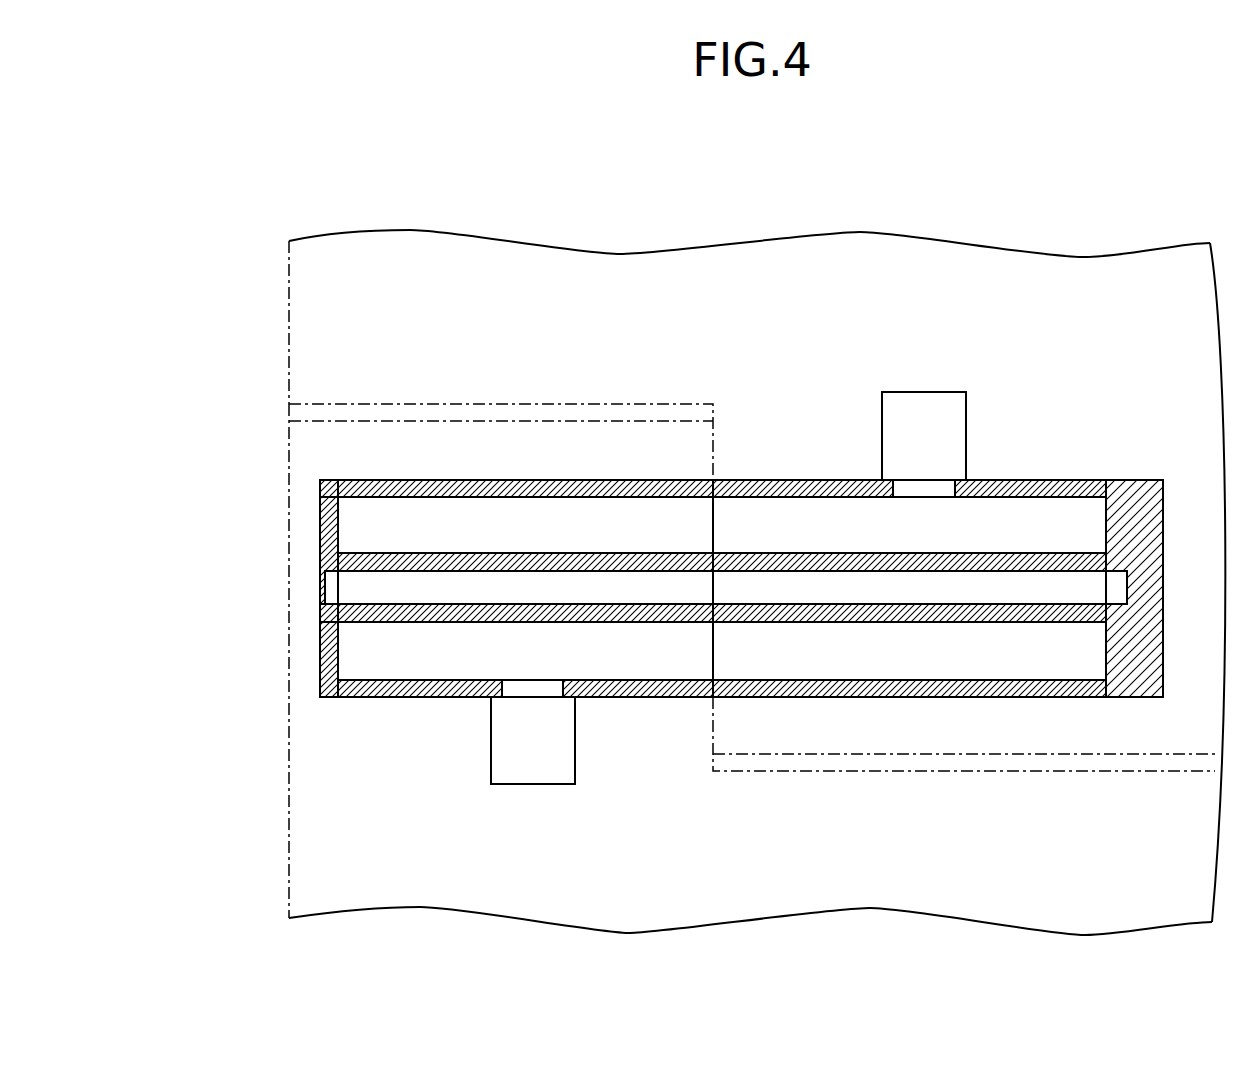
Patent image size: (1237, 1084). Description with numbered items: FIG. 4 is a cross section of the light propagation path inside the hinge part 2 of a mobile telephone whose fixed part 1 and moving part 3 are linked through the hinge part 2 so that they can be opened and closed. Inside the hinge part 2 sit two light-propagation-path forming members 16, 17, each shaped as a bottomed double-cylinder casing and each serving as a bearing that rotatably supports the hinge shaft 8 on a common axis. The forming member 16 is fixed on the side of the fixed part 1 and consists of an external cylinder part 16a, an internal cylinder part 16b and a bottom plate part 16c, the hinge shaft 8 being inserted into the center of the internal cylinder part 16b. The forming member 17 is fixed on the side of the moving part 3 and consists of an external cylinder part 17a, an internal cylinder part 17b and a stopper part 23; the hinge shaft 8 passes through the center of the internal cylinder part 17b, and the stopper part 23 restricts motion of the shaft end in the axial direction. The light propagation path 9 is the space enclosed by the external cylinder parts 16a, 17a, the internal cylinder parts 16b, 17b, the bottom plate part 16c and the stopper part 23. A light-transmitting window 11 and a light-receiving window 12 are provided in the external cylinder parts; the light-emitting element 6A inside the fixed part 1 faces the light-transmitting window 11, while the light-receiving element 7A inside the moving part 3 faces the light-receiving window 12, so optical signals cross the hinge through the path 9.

The fixed part 1 is at (333, 828).
The hinge part 2 is at (262, 463).
The moving part 3 is at (333, 331).
The light-emitting element 6A is at (533, 770).
The light-receiving element 7A is at (921, 407).
The hinge shaft 8 is at (335, 590).
The light propagation path 9 is at (540, 532).
The light-transmitting window 11 is at (538, 686).
The light-receiving window 12 is at (920, 492).
The light-propagation-path forming member 16 is at (363, 684).
The external cylinder part 16a is at (479, 480).
The internal cylinder part 16b is at (433, 607).
The bottom plate part 16c is at (339, 520).
The light-propagation-path forming member 17 is at (797, 480).
The external cylinder part 17a is at (860, 684).
The internal cylinder part 17b is at (1048, 553).
The stopper part 23 is at (1133, 481).